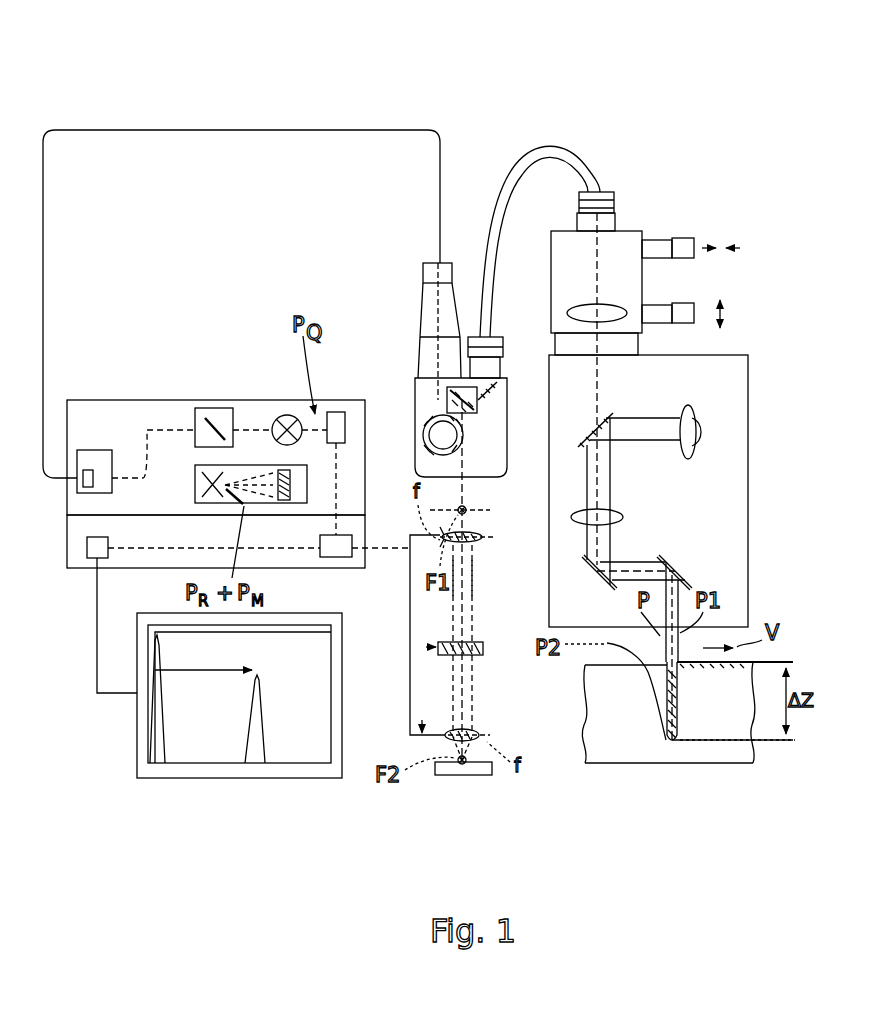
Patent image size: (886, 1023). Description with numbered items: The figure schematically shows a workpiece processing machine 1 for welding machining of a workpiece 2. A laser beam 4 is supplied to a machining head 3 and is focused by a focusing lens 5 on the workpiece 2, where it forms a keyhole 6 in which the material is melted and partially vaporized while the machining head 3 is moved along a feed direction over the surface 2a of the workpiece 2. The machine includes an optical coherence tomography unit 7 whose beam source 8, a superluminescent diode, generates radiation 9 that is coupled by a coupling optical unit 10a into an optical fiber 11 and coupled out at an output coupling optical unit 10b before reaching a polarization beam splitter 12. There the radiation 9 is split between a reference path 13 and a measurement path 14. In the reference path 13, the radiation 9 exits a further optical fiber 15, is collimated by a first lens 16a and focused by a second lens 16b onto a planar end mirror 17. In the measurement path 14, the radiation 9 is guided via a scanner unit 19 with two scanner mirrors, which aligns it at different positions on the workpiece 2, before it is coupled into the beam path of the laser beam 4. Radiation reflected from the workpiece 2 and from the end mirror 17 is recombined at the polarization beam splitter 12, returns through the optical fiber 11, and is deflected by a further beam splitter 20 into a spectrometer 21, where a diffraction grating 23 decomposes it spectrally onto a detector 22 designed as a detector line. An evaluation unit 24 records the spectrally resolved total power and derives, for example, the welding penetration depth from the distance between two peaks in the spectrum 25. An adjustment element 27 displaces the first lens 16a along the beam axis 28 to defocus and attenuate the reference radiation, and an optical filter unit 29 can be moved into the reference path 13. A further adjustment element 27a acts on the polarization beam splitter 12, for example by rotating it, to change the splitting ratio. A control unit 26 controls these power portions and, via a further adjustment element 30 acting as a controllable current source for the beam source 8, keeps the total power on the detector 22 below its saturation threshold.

The workpiece processing machine 1 is at (670, 89).
The workpiece 2 is at (605, 727).
The surface 2a is at (615, 655).
The machining head 3 is at (748, 412).
The laser beam 4 is at (645, 414).
The focusing lens 5 is at (620, 517).
The keyhole 6 is at (663, 733).
The optical coherence tomography unit 7 is at (467, 145).
The beam source 8 is at (289, 415).
The radiation 9 is at (255, 428).
The coupling optical unit 10a is at (90, 460).
The output coupling optical unit 10b is at (425, 275).
The optical fiber 11 is at (222, 128).
The polarization beam splitter 12 is at (418, 412).
The reference path 13 is at (437, 633).
The measurement path 14 is at (686, 209).
The further optical fiber 15 is at (465, 455).
The first lens 16a is at (470, 545).
The second lens 16b is at (465, 728).
The end mirror 17 is at (478, 777).
The scanner unit 19 is at (623, 248).
The further beam splitter 20 is at (212, 407).
The spectrometer 21 is at (196, 481).
The detector 22 is at (295, 505).
The diffraction grating 23 is at (213, 497).
The evaluation unit 24 is at (86, 548).
The spectrum 25 is at (198, 748).
The control unit 26 is at (347, 558).
The adjustment element 27 is at (422, 540).
The adjustment element 27a is at (492, 400).
The beam axis 28 is at (469, 565).
The optical filter unit 29 is at (455, 658).
The further adjustment element 30 is at (338, 412).